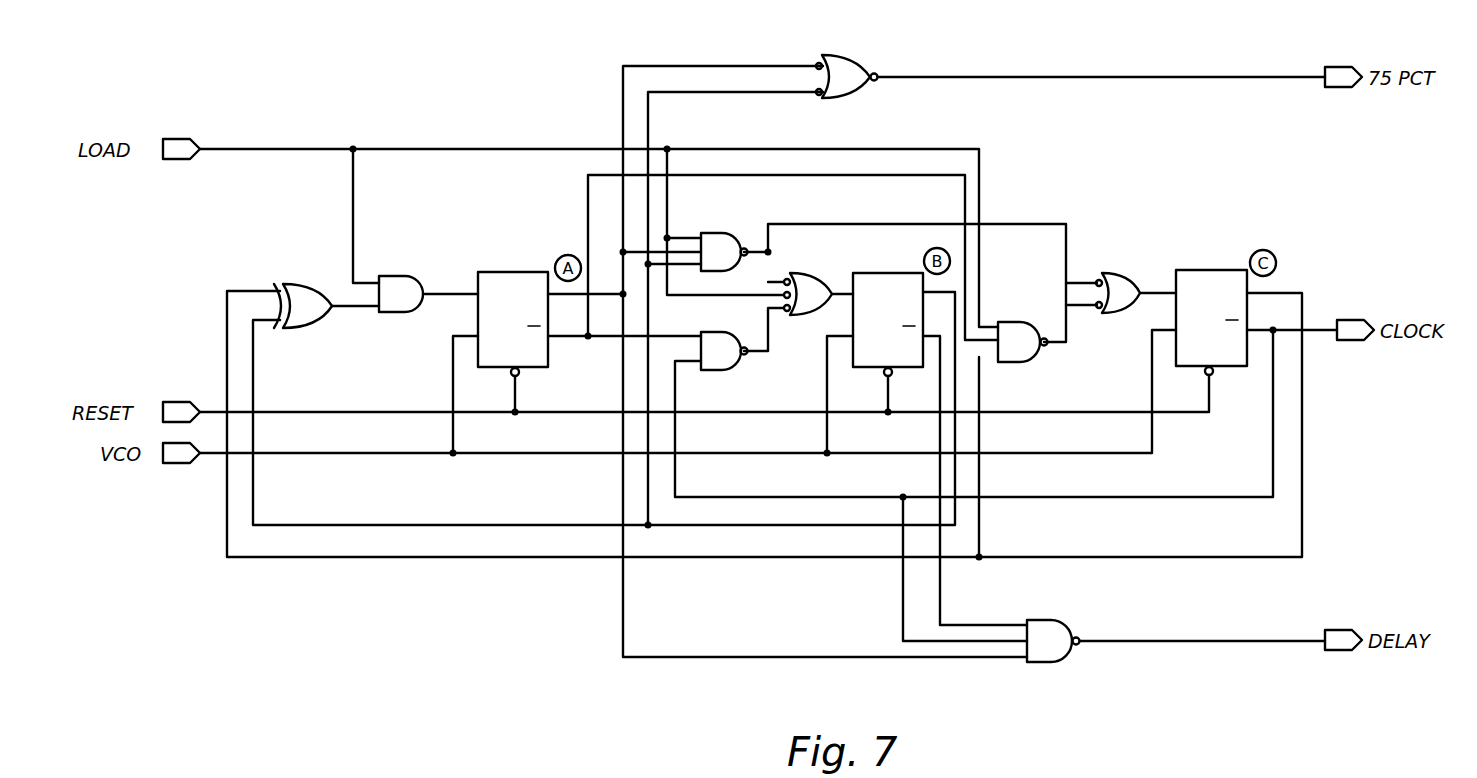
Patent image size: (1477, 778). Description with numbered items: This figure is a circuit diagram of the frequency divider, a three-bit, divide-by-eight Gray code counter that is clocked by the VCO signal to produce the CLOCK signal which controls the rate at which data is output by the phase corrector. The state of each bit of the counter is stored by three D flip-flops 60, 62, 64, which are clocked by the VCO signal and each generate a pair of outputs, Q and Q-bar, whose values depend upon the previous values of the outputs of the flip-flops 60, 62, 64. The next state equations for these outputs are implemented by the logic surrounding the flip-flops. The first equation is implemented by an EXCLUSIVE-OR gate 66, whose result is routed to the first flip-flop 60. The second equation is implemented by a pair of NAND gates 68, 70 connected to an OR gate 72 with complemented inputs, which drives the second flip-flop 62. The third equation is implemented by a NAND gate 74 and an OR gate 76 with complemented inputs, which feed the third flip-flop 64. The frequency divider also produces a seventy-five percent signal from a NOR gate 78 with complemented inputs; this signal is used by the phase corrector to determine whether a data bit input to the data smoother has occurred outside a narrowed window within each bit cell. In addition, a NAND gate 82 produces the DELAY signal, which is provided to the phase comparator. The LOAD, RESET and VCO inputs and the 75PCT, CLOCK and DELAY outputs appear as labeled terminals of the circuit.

The D flip-flop 60 is at (511, 271).
The D flip-flop 62 is at (886, 272).
The D flip-flop 64 is at (1210, 269).
The EXCLUSIVE-OR gate 66 is at (300, 292).
The NAND gate 68 is at (723, 236).
The NAND gate 70 is at (730, 366).
The OR gate with complemented inputs 72 is at (806, 281).
The NAND gate 74 is at (1018, 323).
The OR gate with complemented inputs 76 is at (1112, 313).
The NOR gate with complemented inputs 78 is at (850, 64).
The NAND gate 82 is at (1046, 663).